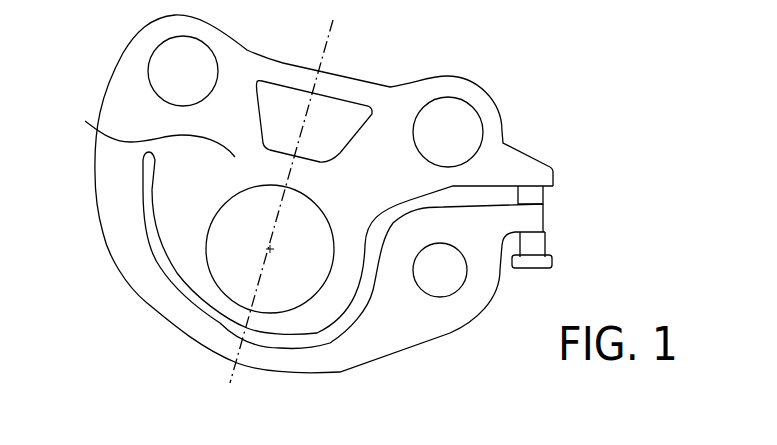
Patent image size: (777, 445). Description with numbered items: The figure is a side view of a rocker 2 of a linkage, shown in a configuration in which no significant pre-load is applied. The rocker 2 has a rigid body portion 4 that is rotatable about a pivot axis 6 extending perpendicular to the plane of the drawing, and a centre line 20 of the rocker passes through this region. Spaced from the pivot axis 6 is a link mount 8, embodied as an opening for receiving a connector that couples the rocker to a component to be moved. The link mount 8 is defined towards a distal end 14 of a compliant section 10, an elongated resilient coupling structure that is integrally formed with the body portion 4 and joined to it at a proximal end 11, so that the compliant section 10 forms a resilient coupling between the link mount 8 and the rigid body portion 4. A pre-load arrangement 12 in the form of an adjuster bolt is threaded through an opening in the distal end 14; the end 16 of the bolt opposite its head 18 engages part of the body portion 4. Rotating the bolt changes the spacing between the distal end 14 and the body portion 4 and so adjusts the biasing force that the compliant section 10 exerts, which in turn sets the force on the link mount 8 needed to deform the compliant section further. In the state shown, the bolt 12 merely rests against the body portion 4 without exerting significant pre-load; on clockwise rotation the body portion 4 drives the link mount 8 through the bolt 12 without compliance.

The rocker 2 is at (647, 88).
The rigid body portion 4 is at (153, 131).
The pivot axis 6 is at (269, 250).
The link mount 8 is at (461, 284).
The compliant section 10 is at (152, 297).
The proximal end 11 is at (105, 175).
The pre-load arrangement 12 is at (541, 240).
The distal end 14 is at (543, 216).
The end of the bolt 16 is at (541, 192).
The head 18 is at (553, 262).
The centre line 20 is at (333, 22).